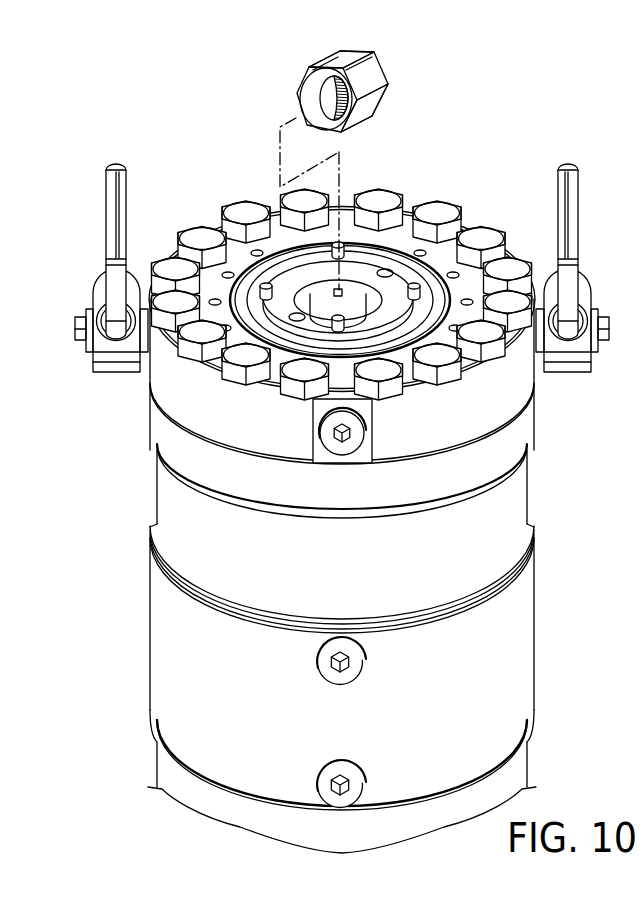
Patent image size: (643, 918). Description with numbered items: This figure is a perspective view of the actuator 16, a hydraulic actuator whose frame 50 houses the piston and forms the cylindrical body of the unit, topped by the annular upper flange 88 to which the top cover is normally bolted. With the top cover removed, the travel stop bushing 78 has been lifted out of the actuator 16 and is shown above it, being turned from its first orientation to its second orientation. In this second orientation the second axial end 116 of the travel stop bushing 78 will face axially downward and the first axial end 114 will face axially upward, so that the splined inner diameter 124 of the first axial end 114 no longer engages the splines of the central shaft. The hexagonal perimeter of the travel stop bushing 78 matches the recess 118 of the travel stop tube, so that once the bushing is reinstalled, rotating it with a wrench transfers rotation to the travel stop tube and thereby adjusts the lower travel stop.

The actuator 16 is at (521, 93).
The frame 50 is at (534, 633).
The travel stop bushing 78 is at (330, 95).
The upper flange 88 is at (173, 385).
The first axial end 114 is at (371, 110).
The second axial end 116 is at (320, 108).
The recess 118 is at (381, 75).
The inner diameter 124 is at (322, 92).